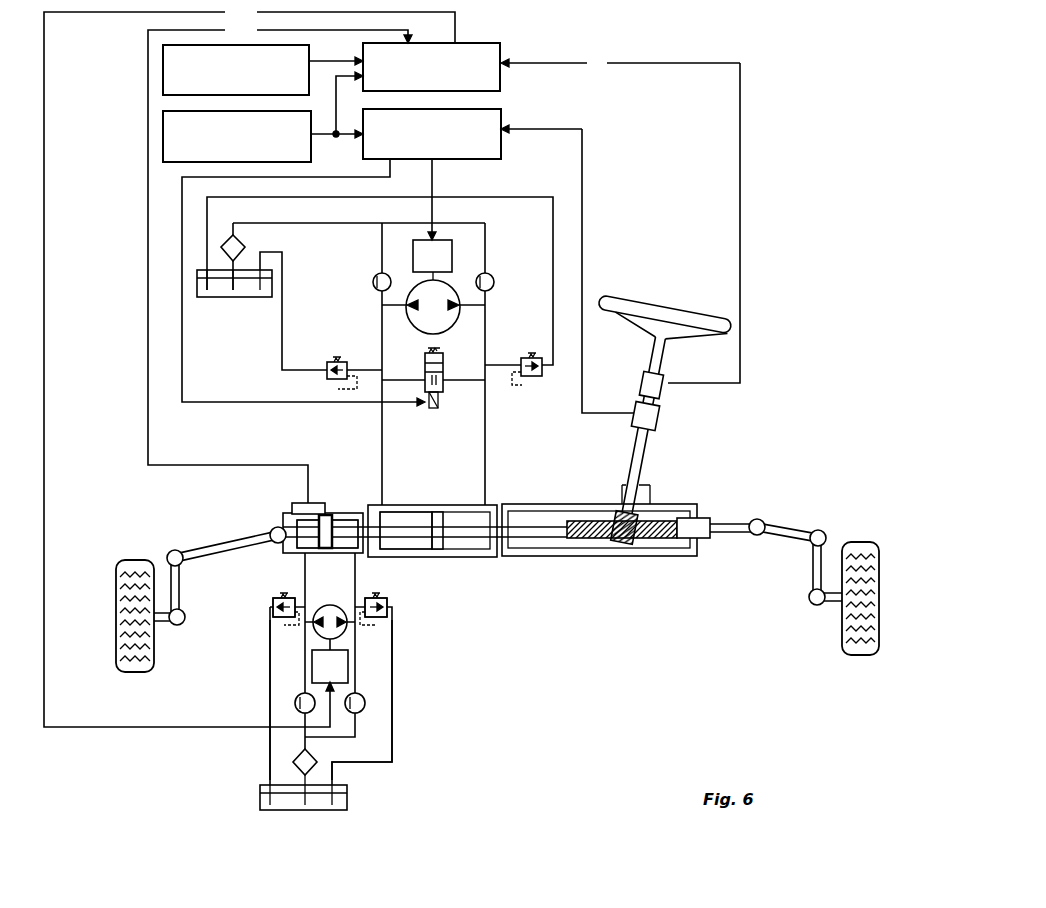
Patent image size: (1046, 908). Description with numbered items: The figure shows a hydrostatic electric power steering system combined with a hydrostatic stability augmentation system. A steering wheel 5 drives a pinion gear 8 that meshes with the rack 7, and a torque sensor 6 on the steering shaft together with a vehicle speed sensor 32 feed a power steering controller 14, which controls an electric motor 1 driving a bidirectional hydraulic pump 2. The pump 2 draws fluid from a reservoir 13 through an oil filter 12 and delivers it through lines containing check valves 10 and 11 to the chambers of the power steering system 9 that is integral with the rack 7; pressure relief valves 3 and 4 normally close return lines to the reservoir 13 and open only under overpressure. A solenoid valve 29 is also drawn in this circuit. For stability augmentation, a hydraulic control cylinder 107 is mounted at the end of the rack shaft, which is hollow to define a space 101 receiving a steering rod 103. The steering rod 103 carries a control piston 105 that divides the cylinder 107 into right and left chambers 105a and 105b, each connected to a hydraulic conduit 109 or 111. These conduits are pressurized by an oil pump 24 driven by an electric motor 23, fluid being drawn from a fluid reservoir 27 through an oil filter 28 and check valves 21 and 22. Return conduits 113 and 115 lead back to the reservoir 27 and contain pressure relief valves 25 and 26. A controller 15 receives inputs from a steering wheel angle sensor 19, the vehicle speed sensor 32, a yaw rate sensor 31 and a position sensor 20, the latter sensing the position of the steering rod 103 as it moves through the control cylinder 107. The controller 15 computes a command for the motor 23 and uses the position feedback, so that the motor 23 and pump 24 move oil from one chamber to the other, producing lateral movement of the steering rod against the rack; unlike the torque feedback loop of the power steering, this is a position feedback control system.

The yaw rate sensor 31 is at (236, 70).
The vehicle speed sensor 32 is at (237, 136).
The controller 15 is at (431, 67).
The power steering controller 14 is at (432, 134).
The electric motor 1 is at (440, 248).
The hydraulic pump 2 is at (410, 312).
The check valve 10 is at (377, 276).
The check valve 11 is at (488, 275).
The oil filter 12 is at (222, 243).
The reservoir 13 is at (197, 283).
The pressure relief valve 3 is at (327, 365).
The pressure relief valve 4 is at (546, 405).
The solenoid valve 29 is at (443, 385).
The steering wheel 5 is at (646, 390).
The steering wheel angle sensor 19 is at (657, 383).
The torque sensor 6 is at (730, 416).
The rack 7 is at (660, 520).
The pinion gear 8 is at (632, 546).
The power steering system 9 is at (445, 546).
The space 101 is at (407, 525).
The steering rod 103 is at (368, 505).
The control piston 105 is at (330, 513).
The right chamber 105a is at (297, 547).
The left chamber 105b is at (345, 545).
The hydraulic control cylinder 107 is at (286, 548).
The position sensor 20 is at (302, 503).
The oil pump 24 is at (336, 605).
The electric motor 23 is at (346, 668).
The hydraulic conduit 111 is at (303, 651).
The hydraulic conduit 109 is at (368, 659).
The pressure relief valve 26 is at (272, 605).
The pressure relief valve 25 is at (390, 607).
The check valve 21 is at (297, 706).
The check valve 22 is at (365, 703).
The oil filter 28 is at (318, 762).
The fluid reservoir 27 is at (288, 806).
The return conduit 115 is at (270, 774).
The return conduit 113 is at (382, 763).